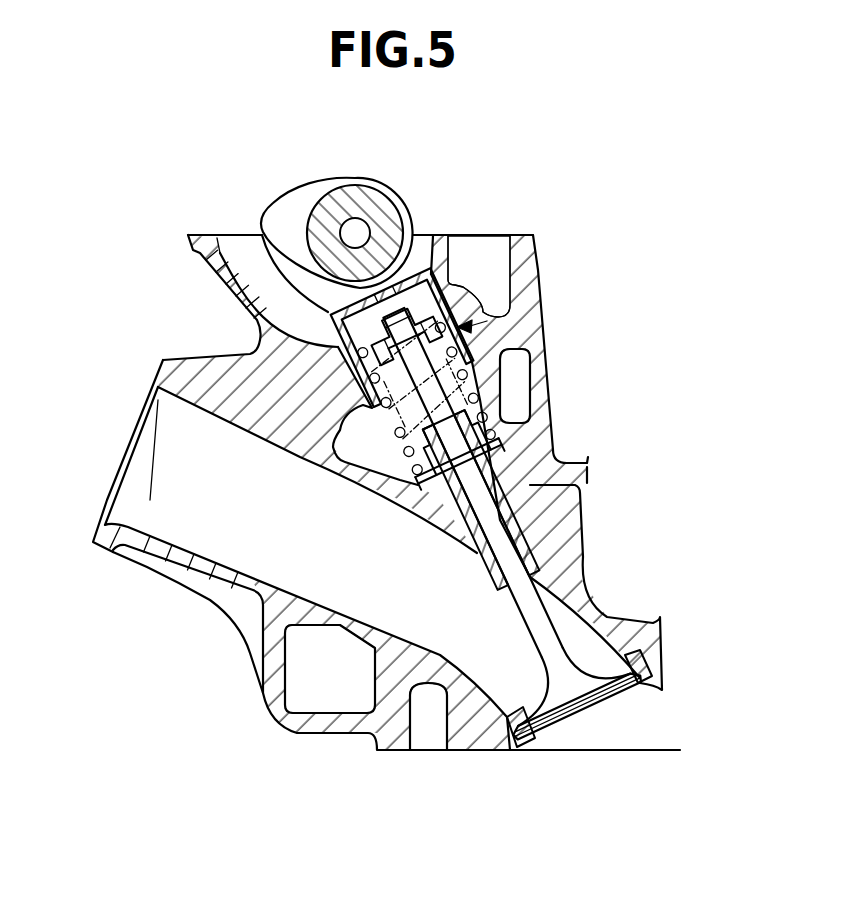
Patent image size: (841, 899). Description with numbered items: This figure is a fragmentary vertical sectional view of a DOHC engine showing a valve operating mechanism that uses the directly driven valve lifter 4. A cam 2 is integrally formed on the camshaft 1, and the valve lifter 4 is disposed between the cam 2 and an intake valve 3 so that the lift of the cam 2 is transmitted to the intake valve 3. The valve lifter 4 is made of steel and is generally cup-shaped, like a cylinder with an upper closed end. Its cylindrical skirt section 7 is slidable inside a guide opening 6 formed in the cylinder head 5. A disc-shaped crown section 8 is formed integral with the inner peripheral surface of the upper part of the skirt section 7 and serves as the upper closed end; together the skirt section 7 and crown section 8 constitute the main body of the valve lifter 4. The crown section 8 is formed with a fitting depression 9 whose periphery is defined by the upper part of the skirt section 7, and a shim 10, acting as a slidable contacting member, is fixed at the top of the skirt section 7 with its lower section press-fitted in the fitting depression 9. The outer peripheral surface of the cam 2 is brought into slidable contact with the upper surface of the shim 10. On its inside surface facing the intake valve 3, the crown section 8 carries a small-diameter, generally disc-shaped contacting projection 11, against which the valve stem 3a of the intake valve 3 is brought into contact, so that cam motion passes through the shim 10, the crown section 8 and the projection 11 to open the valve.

The camshaft 1 is at (363, 205).
The cam 2 is at (291, 213).
The intake valve 3 is at (560, 660).
The valve stem 3a is at (490, 510).
The valve lifter 4 is at (522, 310).
The cylinder head 5 is at (522, 340).
The guide opening 6 is at (300, 352).
The cylindrical skirt section 7 is at (520, 347).
The crown section 8 is at (470, 237).
The fitting depression 9 is at (292, 280).
The shim 10 is at (445, 265).
The contacting projection 11 is at (417, 275).